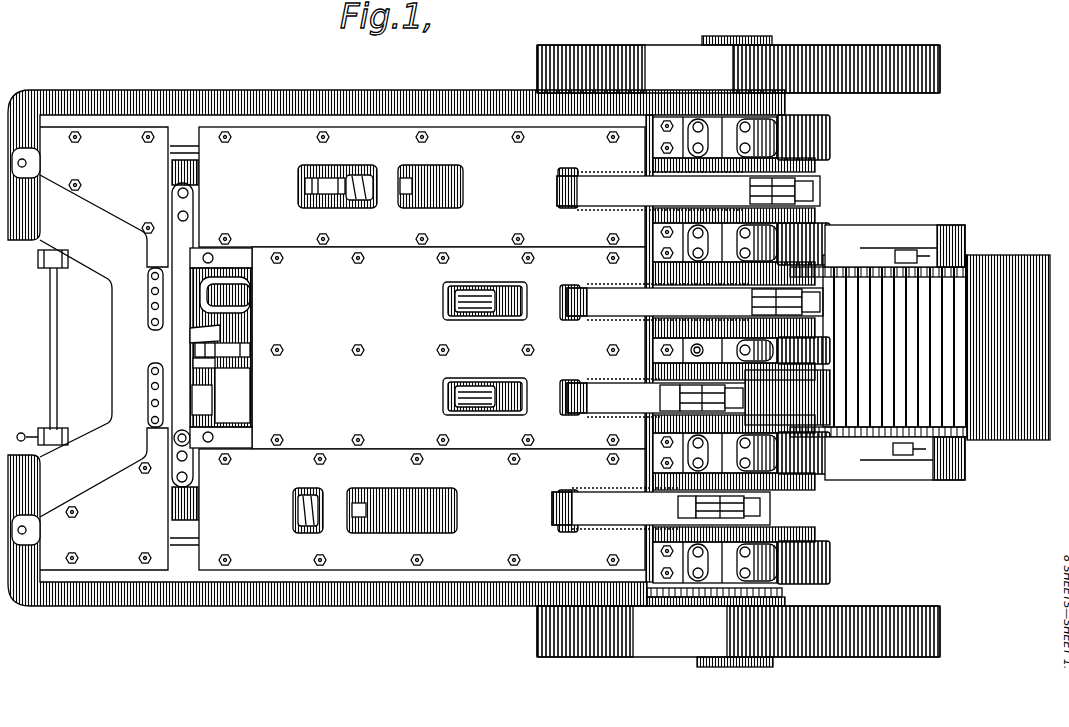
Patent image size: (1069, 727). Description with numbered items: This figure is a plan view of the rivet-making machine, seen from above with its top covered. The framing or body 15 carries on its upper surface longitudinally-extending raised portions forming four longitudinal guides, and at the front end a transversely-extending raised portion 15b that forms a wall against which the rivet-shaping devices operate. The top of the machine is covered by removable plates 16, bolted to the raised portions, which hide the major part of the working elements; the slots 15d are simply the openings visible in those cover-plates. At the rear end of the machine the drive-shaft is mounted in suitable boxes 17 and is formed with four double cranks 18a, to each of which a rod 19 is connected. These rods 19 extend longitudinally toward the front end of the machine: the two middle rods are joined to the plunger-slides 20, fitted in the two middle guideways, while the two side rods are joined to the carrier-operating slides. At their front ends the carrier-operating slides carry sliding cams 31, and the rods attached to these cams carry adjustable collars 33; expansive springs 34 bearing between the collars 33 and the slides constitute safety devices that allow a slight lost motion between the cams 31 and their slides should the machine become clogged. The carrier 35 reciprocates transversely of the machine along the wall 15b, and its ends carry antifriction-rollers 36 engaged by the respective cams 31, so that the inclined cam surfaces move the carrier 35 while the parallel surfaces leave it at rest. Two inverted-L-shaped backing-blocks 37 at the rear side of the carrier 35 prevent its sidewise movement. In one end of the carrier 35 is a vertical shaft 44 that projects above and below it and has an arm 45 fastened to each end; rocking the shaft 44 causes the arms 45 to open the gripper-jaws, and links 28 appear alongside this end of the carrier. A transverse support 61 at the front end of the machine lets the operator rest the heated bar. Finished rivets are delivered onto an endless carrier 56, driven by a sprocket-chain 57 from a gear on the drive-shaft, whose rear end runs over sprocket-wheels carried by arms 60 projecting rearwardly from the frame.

The framing or body 15 is at (396, 359).
The transversely-extending raised portion 15b is at (249, 300).
The frame slot 15d is at (471, 386).
The removable plates 16 is at (342, 348).
The boxes 17 is at (826, 140).
The double cranks 18a is at (813, 176).
The rods 19 is at (687, 350).
The plunger-slides 20 is at (232, 395).
The link plate 28 is at (150, 291).
The sliding cams 31 is at (190, 164).
The collars 33 is at (338, 180).
The expansive springs 34 is at (357, 200).
The carrier 35 is at (179, 335).
The antifriction-rollers 36 is at (196, 190).
The backing-blocks 37 is at (198, 258).
The vertical shaft 44 is at (173, 438).
The arms 45 is at (183, 360).
The endless carrier 56 is at (870, 410).
The sprocket-chain 57 is at (690, 597).
The arms 60 is at (895, 236).
The transverse support 61 is at (52, 328).